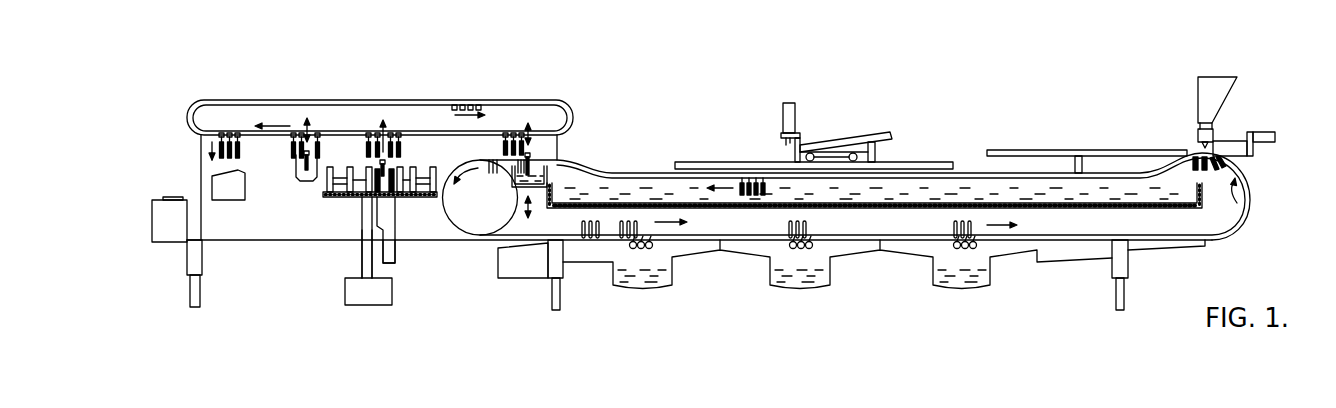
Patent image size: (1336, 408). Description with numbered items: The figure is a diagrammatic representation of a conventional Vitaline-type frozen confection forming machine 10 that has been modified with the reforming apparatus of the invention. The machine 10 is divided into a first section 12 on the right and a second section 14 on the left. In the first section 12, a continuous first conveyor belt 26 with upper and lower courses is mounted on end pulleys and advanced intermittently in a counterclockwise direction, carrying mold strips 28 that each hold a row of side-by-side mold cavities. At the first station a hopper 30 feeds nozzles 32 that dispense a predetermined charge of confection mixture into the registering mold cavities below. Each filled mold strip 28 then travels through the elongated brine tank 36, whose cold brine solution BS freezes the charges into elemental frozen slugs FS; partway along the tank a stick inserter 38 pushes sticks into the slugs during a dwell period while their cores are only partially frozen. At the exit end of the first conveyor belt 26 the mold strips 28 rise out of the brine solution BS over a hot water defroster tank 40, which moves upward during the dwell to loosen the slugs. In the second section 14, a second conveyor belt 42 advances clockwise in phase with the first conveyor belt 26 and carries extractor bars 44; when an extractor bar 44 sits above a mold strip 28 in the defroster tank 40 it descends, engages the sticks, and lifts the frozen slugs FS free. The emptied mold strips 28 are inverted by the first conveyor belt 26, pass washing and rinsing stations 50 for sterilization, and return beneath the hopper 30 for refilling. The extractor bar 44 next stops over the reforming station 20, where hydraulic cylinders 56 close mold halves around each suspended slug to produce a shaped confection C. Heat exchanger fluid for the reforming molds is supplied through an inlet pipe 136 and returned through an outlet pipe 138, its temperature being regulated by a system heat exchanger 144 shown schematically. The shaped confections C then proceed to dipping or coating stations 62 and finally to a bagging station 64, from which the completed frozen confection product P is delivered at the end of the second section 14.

The frozen confection machine 10 is at (683, 113).
The first section 12 is at (926, 142).
The second section 14 is at (414, 80).
The reforming station 20 is at (344, 204).
The first conveyor belt 26 is at (1249, 214).
The mold strips 28 is at (1260, 168).
The hopper 30 is at (1218, 96).
The nozzles 32 is at (1213, 141).
The brine tank 36 is at (1147, 210).
The stick inserter 38 is at (793, 113).
The defroster tank 40 is at (512, 187).
The second conveyor belt 42 is at (573, 113).
The extractor bars 44 is at (473, 104).
The washing and rinsing stations 50 is at (630, 246).
The hydraulic cylinders 56 is at (336, 167).
The dipping and/or coating stations 62 is at (306, 182).
The bagging station 64 is at (243, 196).
The inlet pipe 136 is at (395, 266).
The outlet pipe 138 is at (362, 261).
The system heat exchanger 144 is at (392, 297).
The frozen confection product P is at (177, 197).
The shaped frozen confection C is at (367, 146).
The frozen slug FS is at (399, 148).
The brine solution BS is at (967, 178).